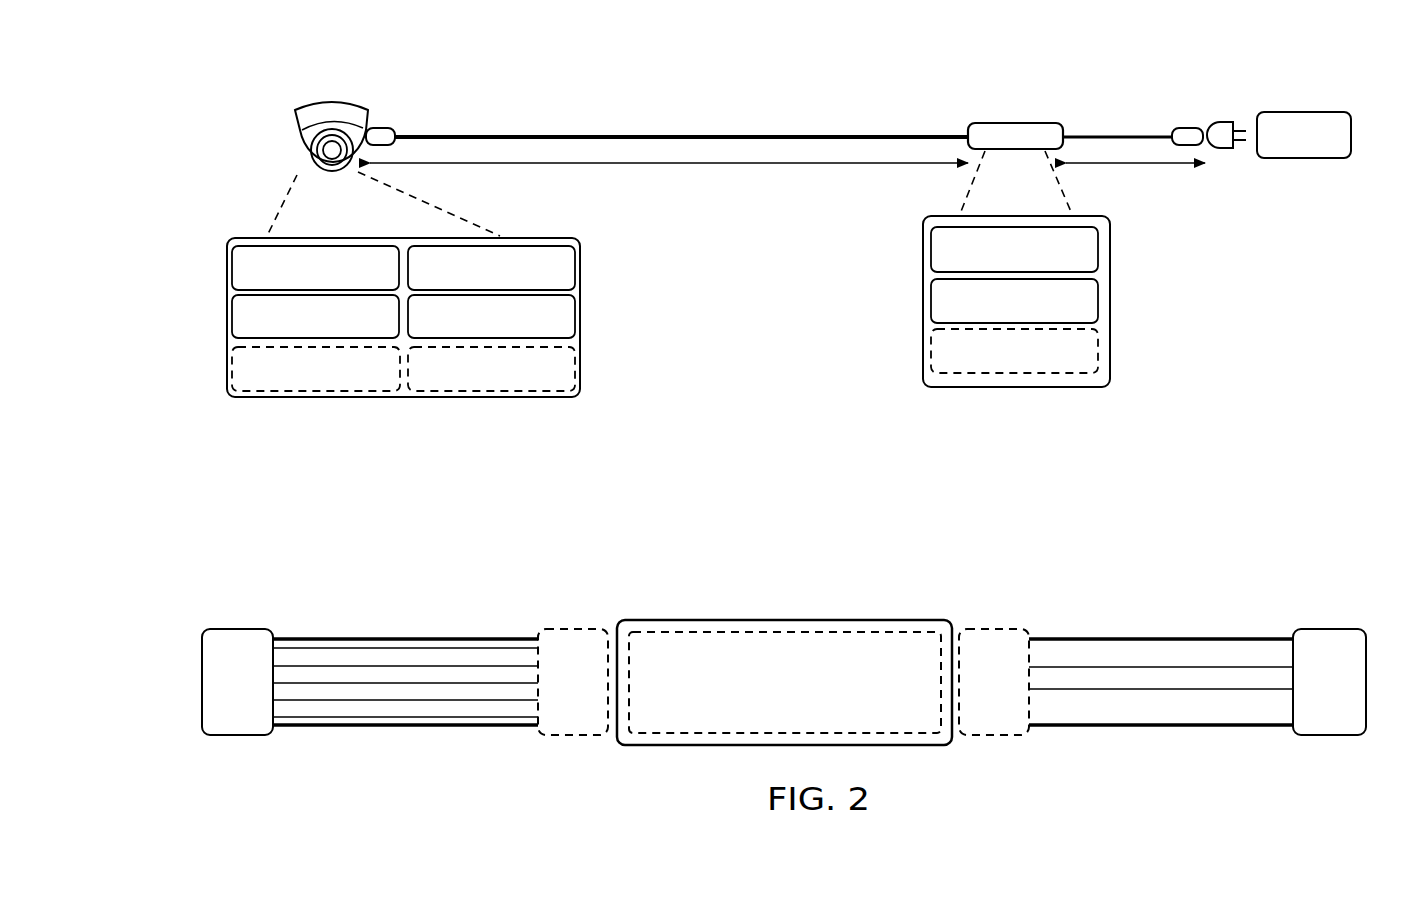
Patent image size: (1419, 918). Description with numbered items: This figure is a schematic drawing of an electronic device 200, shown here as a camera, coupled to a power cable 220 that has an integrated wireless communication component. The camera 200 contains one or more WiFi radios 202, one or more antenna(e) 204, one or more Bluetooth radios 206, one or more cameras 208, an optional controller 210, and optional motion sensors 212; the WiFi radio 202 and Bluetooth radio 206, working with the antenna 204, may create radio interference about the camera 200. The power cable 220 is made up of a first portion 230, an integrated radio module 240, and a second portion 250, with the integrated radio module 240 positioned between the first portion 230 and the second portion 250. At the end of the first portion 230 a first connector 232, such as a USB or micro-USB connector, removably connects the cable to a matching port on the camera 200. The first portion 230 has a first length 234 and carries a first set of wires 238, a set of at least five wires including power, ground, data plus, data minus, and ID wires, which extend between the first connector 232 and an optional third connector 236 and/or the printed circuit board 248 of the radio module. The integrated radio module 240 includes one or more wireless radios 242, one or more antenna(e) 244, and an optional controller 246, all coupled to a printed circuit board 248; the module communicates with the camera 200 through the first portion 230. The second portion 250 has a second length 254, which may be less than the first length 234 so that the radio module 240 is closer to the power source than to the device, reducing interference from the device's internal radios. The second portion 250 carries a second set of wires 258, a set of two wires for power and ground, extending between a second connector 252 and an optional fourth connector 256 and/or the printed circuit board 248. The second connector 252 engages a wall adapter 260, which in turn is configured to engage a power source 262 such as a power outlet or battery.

The electronic device 200 is at (297, 100).
The WiFi radio 202 is at (232, 268).
The antenna 204 is at (575, 265).
The Bluetooth radio 206 is at (232, 317).
The camera 208 is at (575, 315).
The controller 210 is at (232, 369).
The motion sensor 212 is at (575, 367).
The power cable 220 is at (849, 70).
The first portion 230 is at (612, 134).
The first connector 232 is at (381, 128).
The first length 234 is at (650, 164).
The third connector 236 is at (577, 628).
The first set of wires 238 is at (425, 663).
The integrated radio module 240 is at (1020, 123).
The wireless radio 242 is at (1098, 250).
The antenna 244 is at (1098, 300).
The controller 246 is at (1098, 352).
The printed circuit board 248 is at (865, 632).
The second portion 250 is at (1122, 135).
The second connector 252 is at (1188, 128).
The second length 254 is at (1135, 164).
The fourth connector 256 is at (1000, 629).
The second set of wires 258 is at (1160, 660).
The wall adapter 260 is at (1228, 122).
The power source 262 is at (1305, 112).